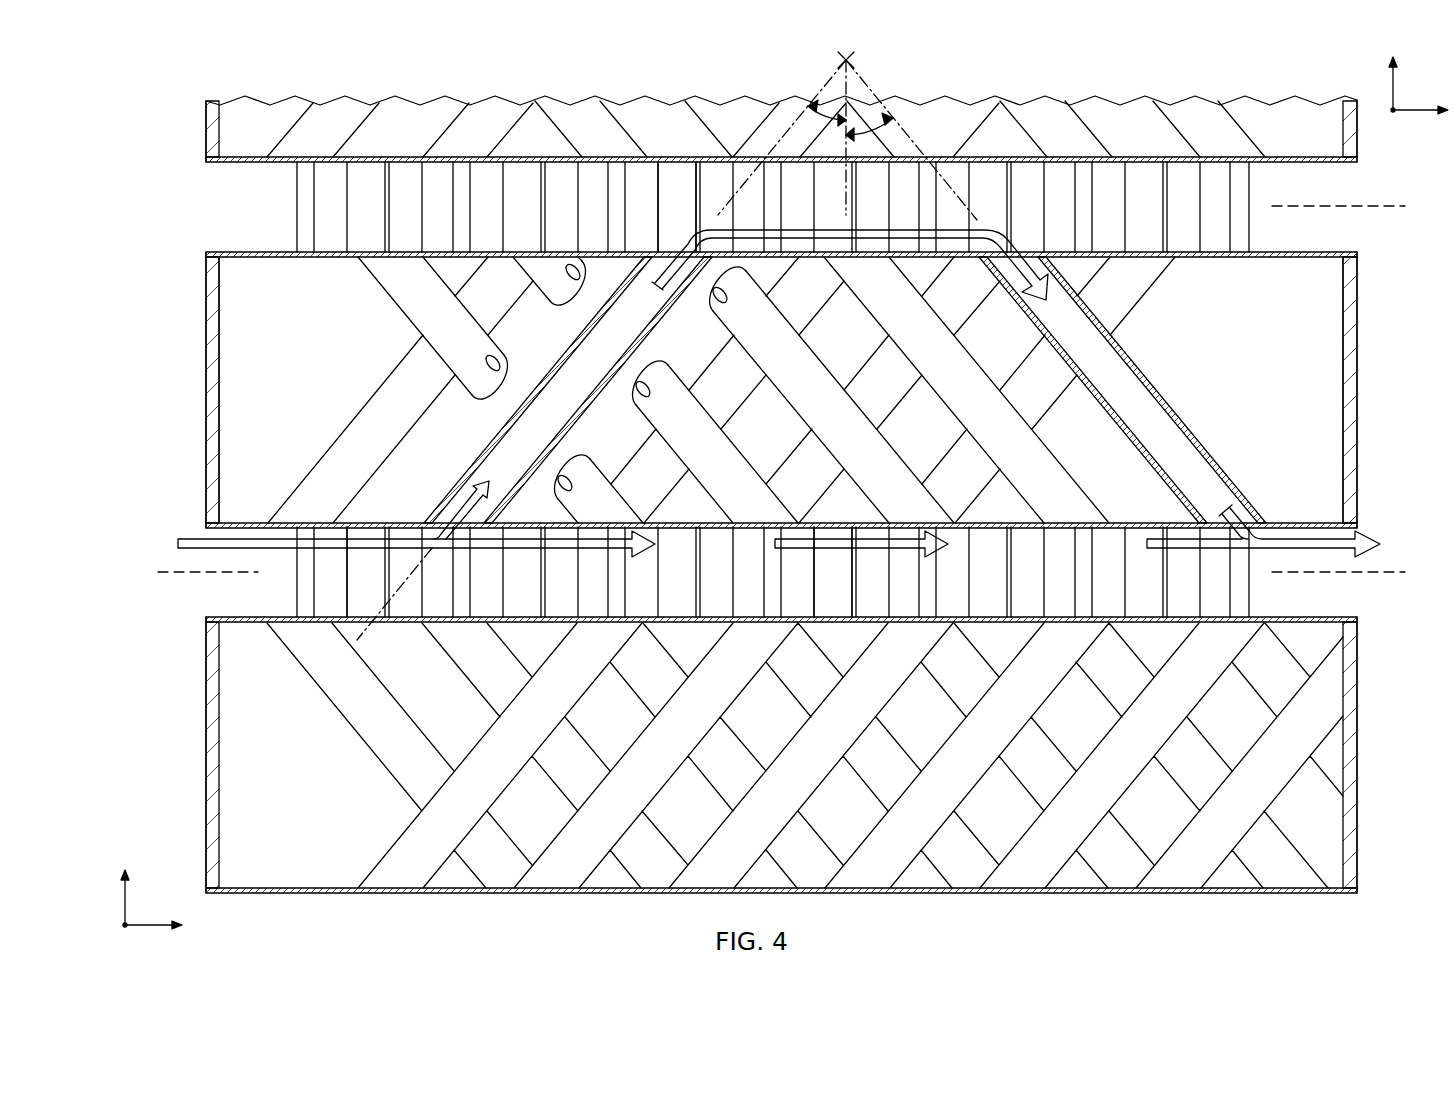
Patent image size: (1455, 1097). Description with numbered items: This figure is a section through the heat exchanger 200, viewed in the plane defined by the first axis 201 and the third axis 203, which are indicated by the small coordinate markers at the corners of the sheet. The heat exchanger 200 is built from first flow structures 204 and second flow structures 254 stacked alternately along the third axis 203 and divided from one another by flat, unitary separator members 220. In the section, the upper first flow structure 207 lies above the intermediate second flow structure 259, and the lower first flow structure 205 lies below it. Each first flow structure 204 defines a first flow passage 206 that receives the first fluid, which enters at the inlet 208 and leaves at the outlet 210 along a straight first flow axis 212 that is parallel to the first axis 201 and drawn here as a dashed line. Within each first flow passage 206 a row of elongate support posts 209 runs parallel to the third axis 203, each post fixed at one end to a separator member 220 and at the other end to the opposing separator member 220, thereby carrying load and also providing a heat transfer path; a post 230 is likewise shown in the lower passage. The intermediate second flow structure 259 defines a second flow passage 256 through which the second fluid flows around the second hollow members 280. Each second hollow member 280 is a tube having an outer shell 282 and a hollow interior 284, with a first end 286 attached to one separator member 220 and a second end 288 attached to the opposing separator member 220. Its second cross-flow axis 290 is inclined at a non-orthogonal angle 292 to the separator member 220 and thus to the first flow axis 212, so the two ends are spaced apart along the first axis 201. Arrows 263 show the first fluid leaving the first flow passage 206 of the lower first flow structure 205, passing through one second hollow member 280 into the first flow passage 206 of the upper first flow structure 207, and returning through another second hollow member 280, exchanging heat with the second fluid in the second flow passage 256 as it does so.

The heat exchanger 200 is at (150, 136).
The first axis 201 is at (1422, 105).
The third axis 203 is at (1393, 95).
The first flow structure 204 is at (716, 389).
The lower first flow structure 205 is at (215, 617).
The first flow passage 206 is at (686, 196).
The upper first flow structure 207 is at (240, 218).
The inlet 208 is at (215, 528).
The support post 209 is at (297, 198).
The outlet 210 is at (1360, 530).
The first flow axis 212 is at (1392, 206).
The separator member 220 is at (789, 524).
The channel wall 230 is at (355, 580).
The second flow structure 254 is at (205, 352).
The second flow passage 256 is at (792, 441).
The intermediate second flow structure 259 is at (228, 418).
The arrows 263 is at (756, 364).
The second hollow member 280 is at (850, 390).
The outer shell 282 is at (575, 331).
The interior 284 is at (500, 452).
The first end 286 is at (487, 533).
The second end 288 is at (650, 253).
The second cross-flow axis 290 is at (805, 108).
The angle 292 is at (843, 128).